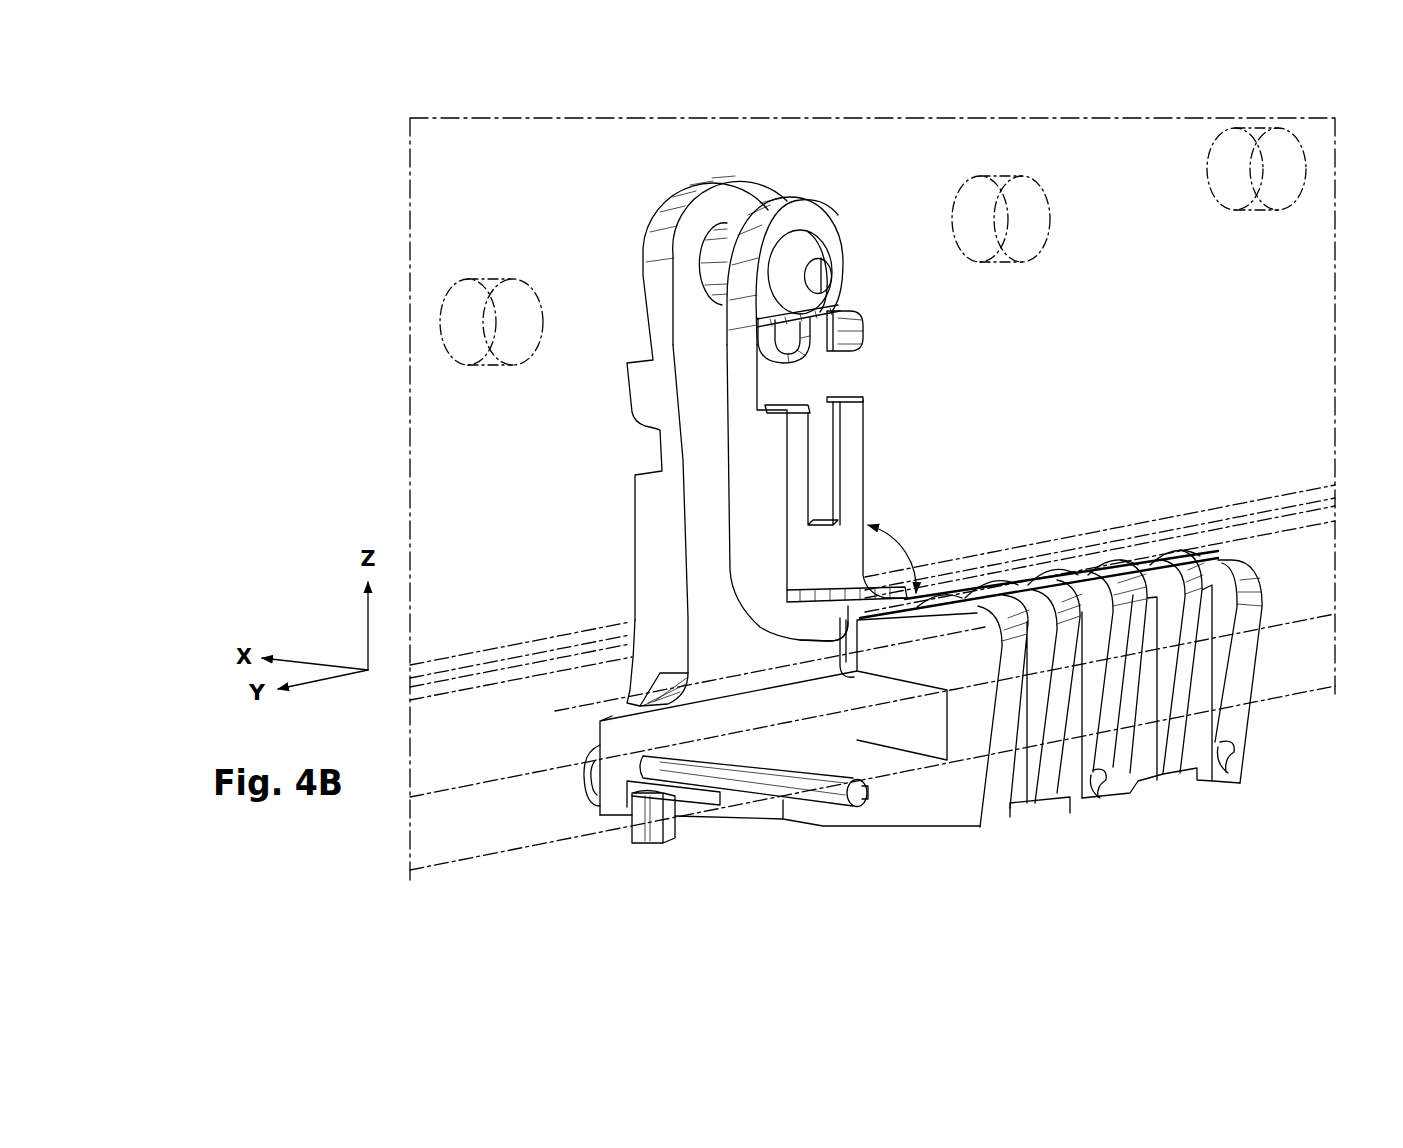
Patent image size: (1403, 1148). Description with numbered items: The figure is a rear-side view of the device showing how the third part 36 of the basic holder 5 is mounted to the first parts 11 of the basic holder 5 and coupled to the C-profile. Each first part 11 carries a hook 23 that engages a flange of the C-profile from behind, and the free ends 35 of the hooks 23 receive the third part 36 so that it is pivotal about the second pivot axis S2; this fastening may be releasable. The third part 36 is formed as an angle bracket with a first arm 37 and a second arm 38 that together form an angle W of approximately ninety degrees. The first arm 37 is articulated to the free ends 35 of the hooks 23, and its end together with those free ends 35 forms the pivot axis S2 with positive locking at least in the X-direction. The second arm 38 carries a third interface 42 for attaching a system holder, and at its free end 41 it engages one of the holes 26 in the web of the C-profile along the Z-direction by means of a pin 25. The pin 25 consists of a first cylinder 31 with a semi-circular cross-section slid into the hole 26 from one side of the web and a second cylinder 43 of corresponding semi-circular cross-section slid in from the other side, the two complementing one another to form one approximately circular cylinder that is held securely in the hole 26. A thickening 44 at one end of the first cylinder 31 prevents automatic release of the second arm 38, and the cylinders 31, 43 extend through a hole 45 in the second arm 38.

The basic holder 5 is at (706, 816).
The first part 11 is at (1243, 685).
The hook 23 is at (1233, 733).
The pin 25 is at (704, 245).
The hole 26 is at (520, 348).
The first cylinder 31 is at (812, 250).
The free end 35 is at (1093, 572).
The third part 36 is at (738, 401).
The first arm 37 is at (840, 613).
The second arm 38 is at (752, 542).
The free end 41 is at (773, 245).
The third interface 42 is at (815, 375).
The second cylinder 43 is at (823, 296).
The thickening 44 is at (837, 229).
The hole 45 is at (793, 232).
The angle W is at (900, 550).
The second pivot axis S2 is at (568, 706).